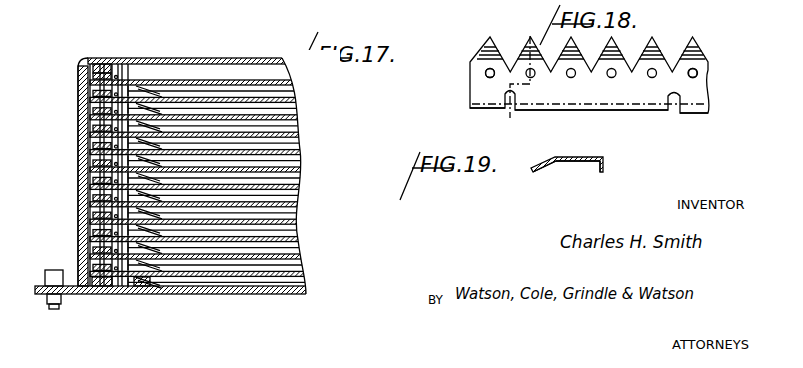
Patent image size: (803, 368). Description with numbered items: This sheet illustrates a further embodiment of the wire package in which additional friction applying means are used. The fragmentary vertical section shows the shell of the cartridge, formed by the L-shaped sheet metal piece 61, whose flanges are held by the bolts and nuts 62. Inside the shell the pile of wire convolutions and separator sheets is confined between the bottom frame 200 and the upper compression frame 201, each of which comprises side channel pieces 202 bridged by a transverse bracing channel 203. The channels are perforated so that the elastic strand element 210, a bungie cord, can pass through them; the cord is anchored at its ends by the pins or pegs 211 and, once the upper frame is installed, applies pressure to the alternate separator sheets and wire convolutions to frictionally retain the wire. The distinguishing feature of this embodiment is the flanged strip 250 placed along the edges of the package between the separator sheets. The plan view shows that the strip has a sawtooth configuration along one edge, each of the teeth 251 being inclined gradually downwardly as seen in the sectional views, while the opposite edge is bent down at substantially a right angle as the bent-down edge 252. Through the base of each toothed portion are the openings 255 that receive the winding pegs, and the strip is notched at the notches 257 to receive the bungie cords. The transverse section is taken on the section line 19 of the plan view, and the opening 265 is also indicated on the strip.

In FIG. 18, the section line 19— 19 is at (539, 33).
In FIG. 17, the L-shaped sheet metal piece 61 is at (84, 60).
In FIG. 17, the bolts and nuts 62 is at (50, 271).
In FIG. 17, the bottom frame 200 is at (267, 293).
In FIG. 17, the upper compression frame 201 is at (220, 71).
In FIG. 17, the side channel pieces 202 is at (196, 291).
In FIG. 17, the transverse bracing channel 203 is at (159, 61).
In FIG. 17, the elastic strand element 210 is at (80, 125).
In FIG. 17, the pins or pegs 211 is at (101, 60).
In FIG. 17, the flanged strip 250 is at (92, 96).
In FIG. 18, the flanged strip 250 is at (628, 96).
In FIG. 19, the flanged strip 250 is at (590, 172).
In FIG. 17, the teeth 251 is at (161, 92).
In FIG. 18, the teeth 251 is at (690, 46).
In FIG. 19, the teeth 251 is at (540, 172).
In FIG. 17, the bent-down edge 252 is at (96, 177).
In FIG. 18, the bent-down edge 252 is at (575, 110).
In FIG. 19, the bent-down edge 252 is at (606, 166).
In FIG. 17, the openings 255 is at (130, 60).
In FIG. 18, the openings 255 is at (486, 72).
In FIG. 19, the openings 255 is at (566, 165).
In FIG. 17, the notches 257 is at (236, 40).
In FIG. 18, the notches 257 is at (480, 100).
In FIG. 18, the hole 265 is at (698, 72).